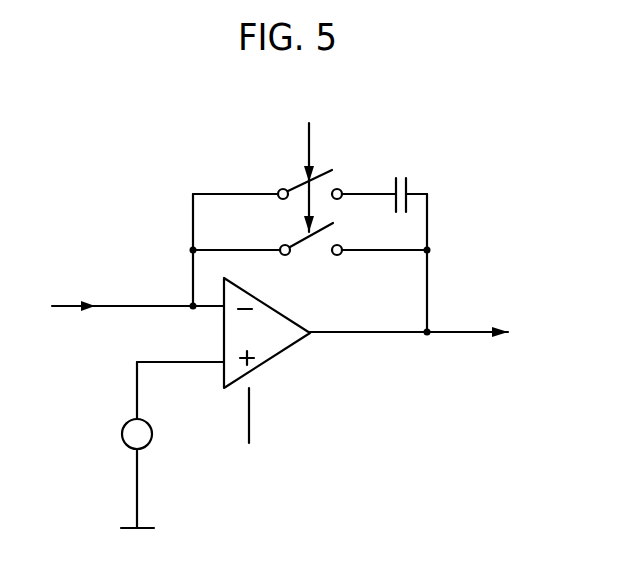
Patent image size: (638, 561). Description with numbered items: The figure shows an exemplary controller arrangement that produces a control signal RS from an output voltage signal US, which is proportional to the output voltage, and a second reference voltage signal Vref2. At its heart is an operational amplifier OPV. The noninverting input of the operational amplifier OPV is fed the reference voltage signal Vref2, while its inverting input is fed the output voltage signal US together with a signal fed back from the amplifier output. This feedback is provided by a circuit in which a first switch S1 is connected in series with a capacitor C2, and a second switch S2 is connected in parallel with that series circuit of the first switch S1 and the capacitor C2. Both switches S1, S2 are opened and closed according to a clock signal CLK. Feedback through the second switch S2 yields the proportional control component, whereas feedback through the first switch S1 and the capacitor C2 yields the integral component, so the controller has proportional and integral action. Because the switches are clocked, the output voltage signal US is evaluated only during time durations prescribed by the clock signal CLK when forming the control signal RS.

The clock signal CLK is at (310, 160).
The first switch S1 is at (294, 176).
The second switch S2 is at (310, 235).
The capacitor C2 is at (406, 178).
The output voltage signal US is at (138, 290).
The control signal RS is at (411, 312).
The operational amplifier OPV is at (267, 362).
The second reference voltage signal Vref2 is at (128, 445).